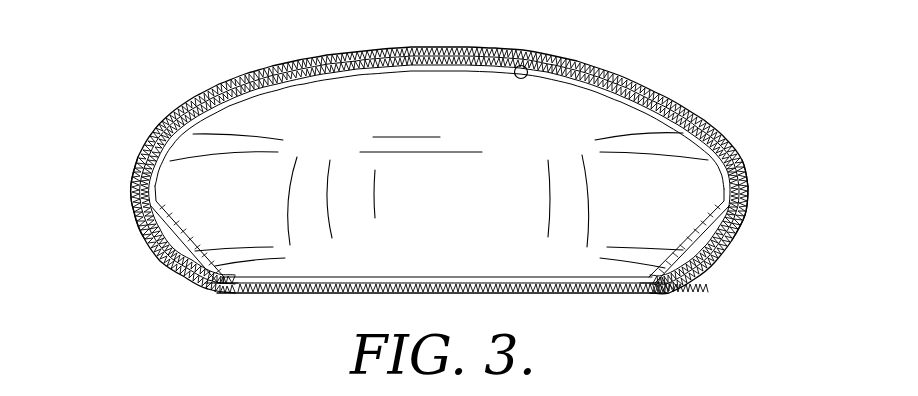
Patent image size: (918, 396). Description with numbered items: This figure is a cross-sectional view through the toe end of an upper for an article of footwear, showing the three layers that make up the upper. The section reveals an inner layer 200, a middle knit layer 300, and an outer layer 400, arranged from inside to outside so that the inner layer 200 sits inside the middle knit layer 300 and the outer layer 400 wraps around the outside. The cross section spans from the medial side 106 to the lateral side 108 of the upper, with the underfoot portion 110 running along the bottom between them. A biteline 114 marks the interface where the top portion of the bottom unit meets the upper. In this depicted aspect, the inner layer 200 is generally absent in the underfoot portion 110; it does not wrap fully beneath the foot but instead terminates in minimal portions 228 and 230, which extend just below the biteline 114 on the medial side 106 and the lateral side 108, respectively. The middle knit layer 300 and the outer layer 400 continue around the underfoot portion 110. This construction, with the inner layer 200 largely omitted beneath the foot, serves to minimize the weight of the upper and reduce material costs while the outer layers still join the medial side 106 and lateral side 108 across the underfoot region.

The medial side 106 is at (132, 205).
The lateral side 108 is at (748, 205).
The underfoot portion 110 is at (438, 289).
The biteline 114 is at (160, 260).
The inner layer 200 is at (536, 60).
The minimal portion 228 is at (237, 295).
The minimal portion 230 is at (643, 295).
The middle knit layer 300 is at (474, 55).
The outer layer 400 is at (440, 49).